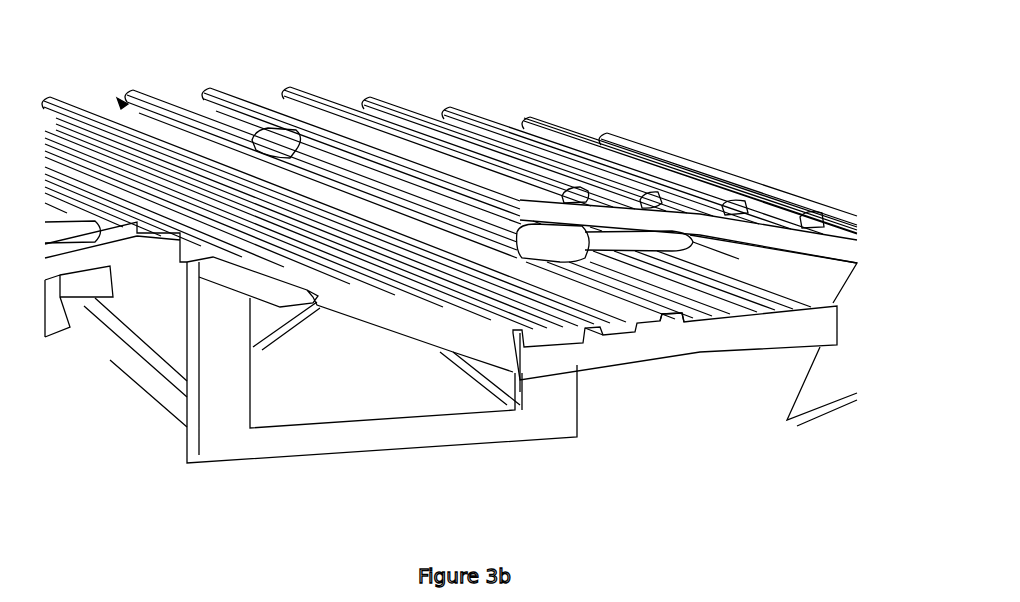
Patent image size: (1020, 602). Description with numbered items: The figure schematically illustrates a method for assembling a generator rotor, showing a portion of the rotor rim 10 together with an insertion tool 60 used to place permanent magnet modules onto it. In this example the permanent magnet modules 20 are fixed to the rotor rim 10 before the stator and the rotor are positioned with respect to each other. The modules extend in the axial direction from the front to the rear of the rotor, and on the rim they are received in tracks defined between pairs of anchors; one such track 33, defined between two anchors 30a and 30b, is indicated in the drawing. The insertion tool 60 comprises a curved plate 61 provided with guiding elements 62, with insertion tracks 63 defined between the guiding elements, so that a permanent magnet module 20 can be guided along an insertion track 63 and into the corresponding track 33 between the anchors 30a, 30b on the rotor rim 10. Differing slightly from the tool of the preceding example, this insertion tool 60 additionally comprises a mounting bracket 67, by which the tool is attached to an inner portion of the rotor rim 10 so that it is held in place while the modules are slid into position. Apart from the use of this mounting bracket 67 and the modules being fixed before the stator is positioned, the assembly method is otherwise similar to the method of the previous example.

The rotor rim 10 is at (710, 225).
The permanent magnet module 20 is at (297, 100).
The anchor 30a is at (78, 96).
The anchor 30b is at (160, 93).
The track 33 is at (121, 100).
The insertion tool 60 is at (433, 456).
The curved plate 61 is at (712, 340).
The guiding element 62 is at (674, 322).
The insertion track 63 is at (643, 340).
The mounting bracket 67 is at (147, 370).